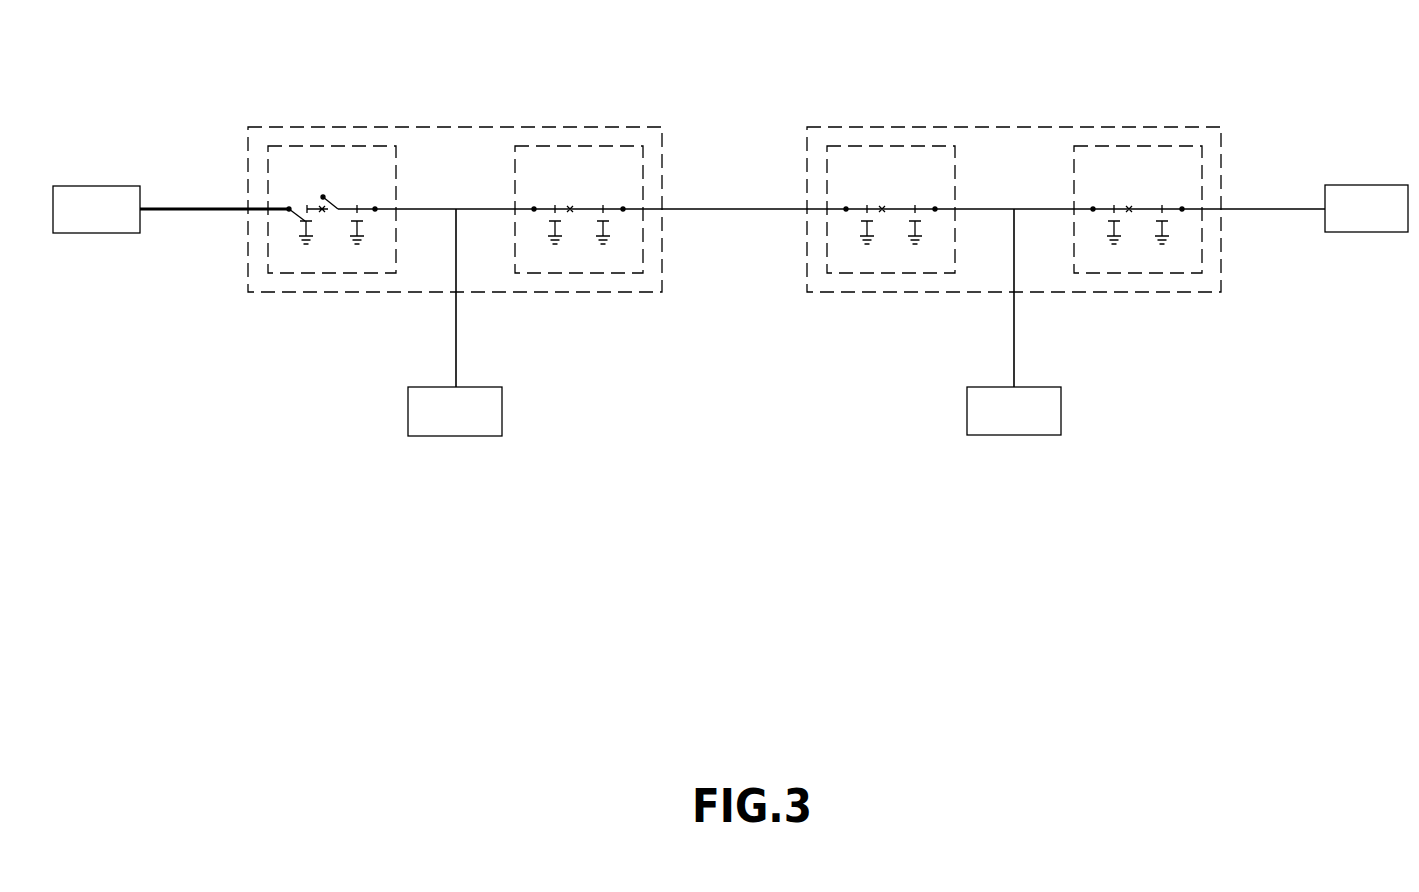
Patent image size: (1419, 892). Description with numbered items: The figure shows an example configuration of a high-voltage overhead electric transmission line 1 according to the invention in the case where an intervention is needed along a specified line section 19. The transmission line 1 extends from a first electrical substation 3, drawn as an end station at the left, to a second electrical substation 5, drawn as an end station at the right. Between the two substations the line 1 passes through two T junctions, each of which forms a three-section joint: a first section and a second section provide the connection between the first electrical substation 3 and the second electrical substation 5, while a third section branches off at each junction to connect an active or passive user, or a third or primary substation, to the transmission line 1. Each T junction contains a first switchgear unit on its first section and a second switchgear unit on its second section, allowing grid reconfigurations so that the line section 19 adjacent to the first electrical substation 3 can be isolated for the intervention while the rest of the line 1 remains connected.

The high-voltage overhead electric transmission line 1 is at (1223, 405).
The first electrical substation 3 is at (100, 186).
The second electrical substation 5 is at (1367, 184).
The line section 19 is at (192, 210).